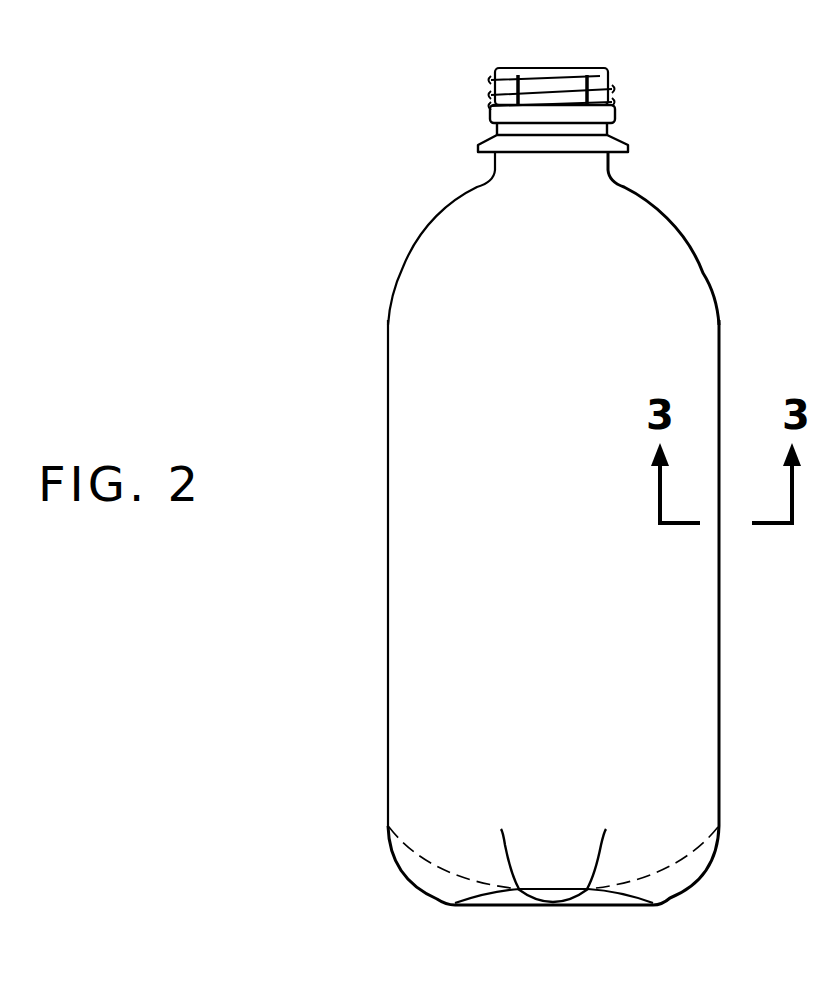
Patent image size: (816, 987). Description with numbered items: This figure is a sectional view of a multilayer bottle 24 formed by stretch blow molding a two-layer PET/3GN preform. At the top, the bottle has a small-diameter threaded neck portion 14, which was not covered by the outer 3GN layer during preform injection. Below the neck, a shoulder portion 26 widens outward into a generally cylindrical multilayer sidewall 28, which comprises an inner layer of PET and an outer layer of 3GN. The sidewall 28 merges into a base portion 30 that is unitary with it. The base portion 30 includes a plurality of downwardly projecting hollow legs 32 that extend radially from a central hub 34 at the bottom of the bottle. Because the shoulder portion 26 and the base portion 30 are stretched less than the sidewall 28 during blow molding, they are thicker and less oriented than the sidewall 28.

The multilayer bottle 24 is at (462, 52).
The threaded neck portion 14 is at (622, 68).
The shoulder portion 26 is at (716, 297).
The multilayer sidewall 28 is at (388, 478).
The base portion 30 is at (720, 843).
The hollow legs 32 is at (437, 903).
The central hub 34 is at (553, 892).